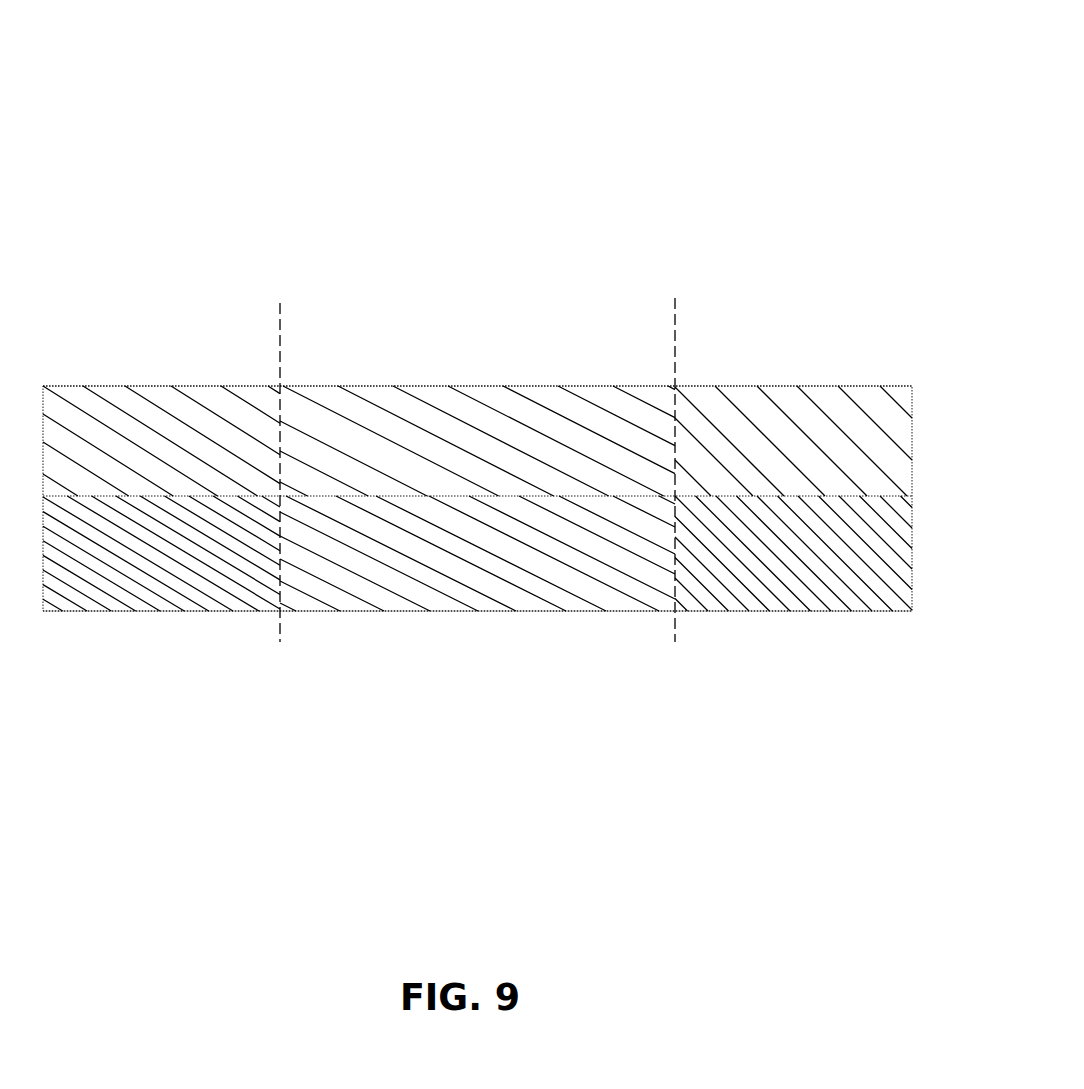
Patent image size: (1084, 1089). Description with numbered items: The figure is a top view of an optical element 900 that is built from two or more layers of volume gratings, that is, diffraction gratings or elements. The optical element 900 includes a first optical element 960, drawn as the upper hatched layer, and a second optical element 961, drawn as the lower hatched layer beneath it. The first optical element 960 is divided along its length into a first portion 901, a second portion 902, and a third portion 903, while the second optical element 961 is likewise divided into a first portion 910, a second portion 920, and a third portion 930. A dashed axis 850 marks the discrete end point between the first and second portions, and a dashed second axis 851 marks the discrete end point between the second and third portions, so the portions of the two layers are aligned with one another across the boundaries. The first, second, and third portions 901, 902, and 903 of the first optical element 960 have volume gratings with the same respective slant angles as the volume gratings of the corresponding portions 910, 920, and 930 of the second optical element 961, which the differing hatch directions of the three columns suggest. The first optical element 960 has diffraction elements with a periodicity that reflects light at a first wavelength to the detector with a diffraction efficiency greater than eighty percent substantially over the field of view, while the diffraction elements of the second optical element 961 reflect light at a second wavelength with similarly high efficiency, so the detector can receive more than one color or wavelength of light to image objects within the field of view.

The optical element 900 is at (535, 103).
The axis 850 is at (280, 303).
The second axis 851 is at (675, 320).
The first portion 901 is at (157, 387).
The second portion 902 is at (478, 384).
The third portion 903 is at (855, 386).
The first portion 910 is at (215, 612).
The second portion 920 is at (472, 611).
The third portion 930 is at (777, 612).
The first optical element 960 is at (912, 443).
The second optical element 961 is at (912, 553).